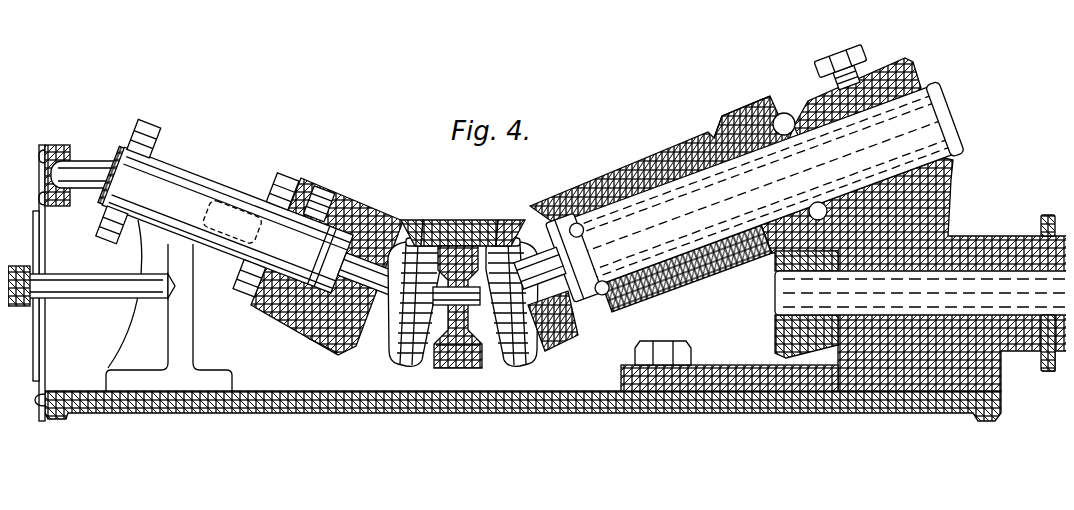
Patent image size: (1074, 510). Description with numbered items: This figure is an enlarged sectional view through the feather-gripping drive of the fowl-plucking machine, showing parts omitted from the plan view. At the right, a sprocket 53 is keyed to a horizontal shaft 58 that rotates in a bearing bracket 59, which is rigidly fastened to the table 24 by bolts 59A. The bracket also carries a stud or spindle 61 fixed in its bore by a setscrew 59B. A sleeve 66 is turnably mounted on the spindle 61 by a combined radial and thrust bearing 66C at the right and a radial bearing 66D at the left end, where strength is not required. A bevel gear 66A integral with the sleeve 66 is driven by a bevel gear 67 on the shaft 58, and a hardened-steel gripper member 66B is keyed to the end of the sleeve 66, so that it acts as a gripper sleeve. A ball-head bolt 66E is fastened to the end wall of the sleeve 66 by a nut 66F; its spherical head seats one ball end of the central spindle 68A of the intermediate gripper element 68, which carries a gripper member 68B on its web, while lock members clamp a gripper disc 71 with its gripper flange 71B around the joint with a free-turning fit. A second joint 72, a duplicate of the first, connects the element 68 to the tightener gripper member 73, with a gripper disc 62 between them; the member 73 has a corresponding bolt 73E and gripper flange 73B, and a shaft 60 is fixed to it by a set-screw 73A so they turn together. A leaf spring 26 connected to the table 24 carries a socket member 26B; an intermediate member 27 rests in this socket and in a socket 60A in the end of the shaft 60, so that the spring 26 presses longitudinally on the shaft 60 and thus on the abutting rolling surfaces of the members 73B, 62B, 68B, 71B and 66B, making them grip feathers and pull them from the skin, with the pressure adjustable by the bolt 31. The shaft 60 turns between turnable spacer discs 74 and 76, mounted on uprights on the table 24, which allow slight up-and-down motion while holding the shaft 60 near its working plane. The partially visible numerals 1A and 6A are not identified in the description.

The table 24 is at (556, 384).
The leaf spring 26 is at (33, 258).
The socket member 26B is at (53, 137).
The intermediate member 27 is at (88, 157).
The bolt 31 is at (107, 268).
The sprocket 53 is at (1032, 216).
The horizontal shaft 58 is at (768, 293).
The bearing bracket 59 is at (935, 190).
The bolts 59A is at (684, 345).
The setscrew 59B is at (852, 44).
The shaft 60 is at (216, 175).
The socket 60A is at (122, 140).
The stud or spindle 61 is at (923, 96).
The gripper disc 62 is at (386, 354).
The gripper flange of disc 62 62B is at (416, 230).
The sleeve 66 is at (661, 152).
The bevel gear 66A is at (745, 110).
The gripper member 66B is at (500, 211).
The combined radial and thrust bearing 66C is at (778, 104).
The radial bearing 66D is at (560, 205).
The ball-head bolt 66E is at (572, 330).
The nut 66F is at (578, 318).
The bevel gear 67 is at (776, 318).
The intermediate gripper element 68 is at (442, 332).
The central spindle 68A is at (458, 366).
The gripper member 68B is at (442, 212).
The gripper disc 71 is at (500, 347).
The gripper flange 71B is at (478, 229).
The second joint 72 is at (378, 342).
The tightener gripper member 73 is at (358, 190).
The set-screw 73A is at (322, 186).
The gripper flange or member 73B is at (398, 212).
The bolt 73E is at (308, 322).
The turnable spacer disc 74 is at (262, 166).
The turnable spacer disc 76 is at (148, 118).
The nut 1A is at (15, 300).
The wall foot 6A is at (27, 392).